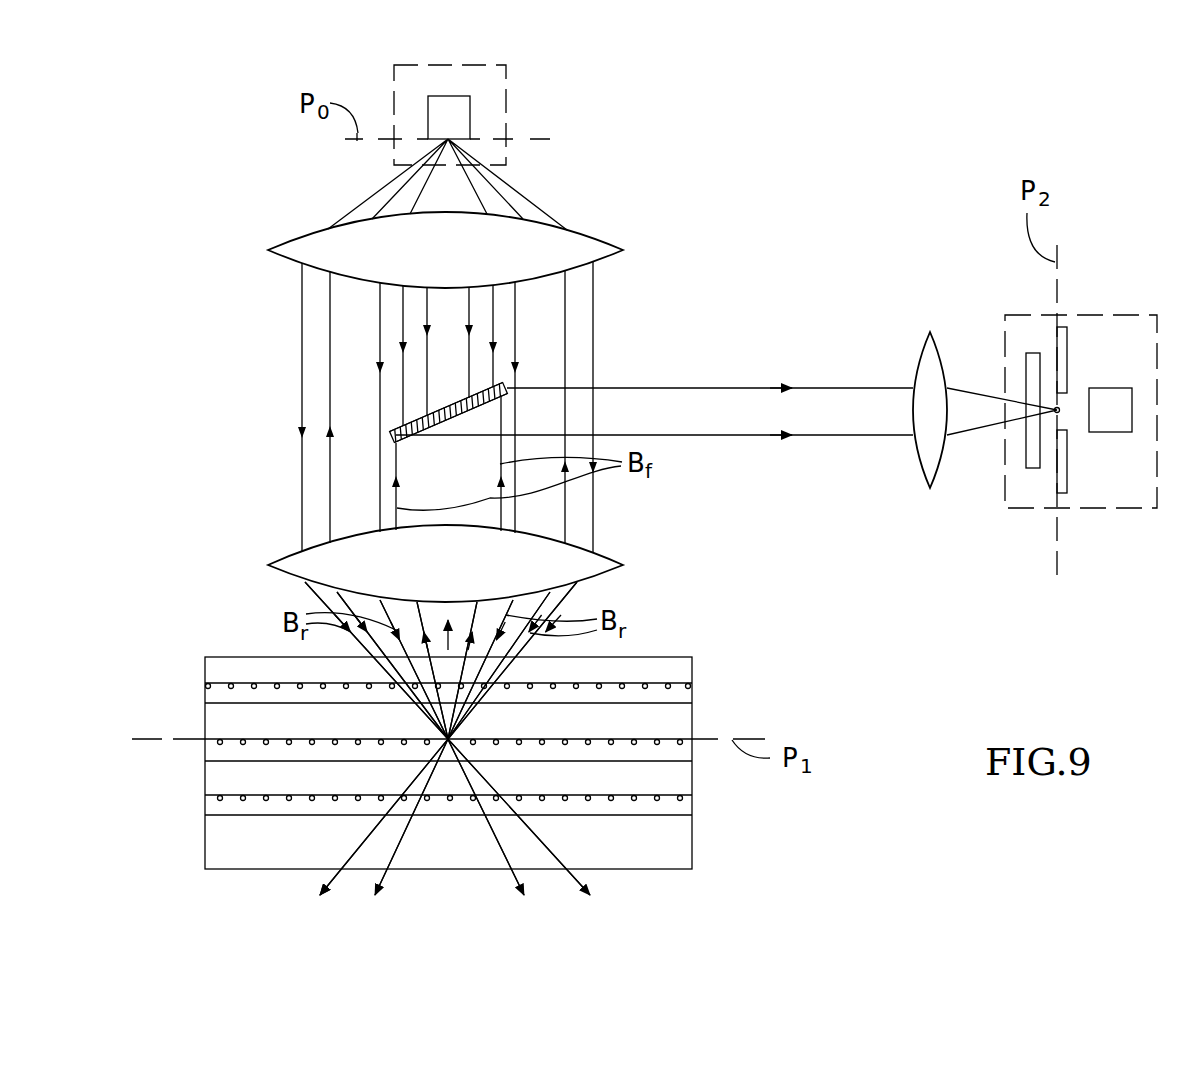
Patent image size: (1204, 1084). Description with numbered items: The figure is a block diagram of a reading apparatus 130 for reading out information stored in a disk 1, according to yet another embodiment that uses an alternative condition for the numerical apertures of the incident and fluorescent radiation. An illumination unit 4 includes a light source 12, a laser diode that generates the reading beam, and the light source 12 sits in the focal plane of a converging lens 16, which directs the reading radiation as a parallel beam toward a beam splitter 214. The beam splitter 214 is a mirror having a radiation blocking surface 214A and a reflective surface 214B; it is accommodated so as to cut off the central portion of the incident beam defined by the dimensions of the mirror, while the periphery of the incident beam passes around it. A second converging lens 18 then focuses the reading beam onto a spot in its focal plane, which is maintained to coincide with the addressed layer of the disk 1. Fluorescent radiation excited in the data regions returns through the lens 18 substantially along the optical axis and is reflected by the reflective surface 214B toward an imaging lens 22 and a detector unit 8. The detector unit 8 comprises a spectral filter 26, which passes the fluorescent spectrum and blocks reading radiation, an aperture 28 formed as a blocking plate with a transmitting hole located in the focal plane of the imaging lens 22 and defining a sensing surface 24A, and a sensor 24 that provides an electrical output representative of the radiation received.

The reading apparatus 130 is at (272, 122).
The illumination unit 4 is at (517, 74).
The light source 12 is at (472, 117).
The converging lens 16 is at (600, 233).
The beam splitter 214 is at (385, 420).
The radiation blocking surface 214A is at (483, 382).
The reflective surface 214B is at (492, 399).
The converging lens 18 is at (598, 548).
The disk 1 is at (692, 642).
The imaging lens 22 is at (940, 345).
The detector unit 8 is at (1138, 308).
The spectral filter 26 is at (1027, 453).
The aperture 28 is at (1062, 325).
The sensing surface 24A is at (1057, 413).
The sensor 24 is at (1110, 388).